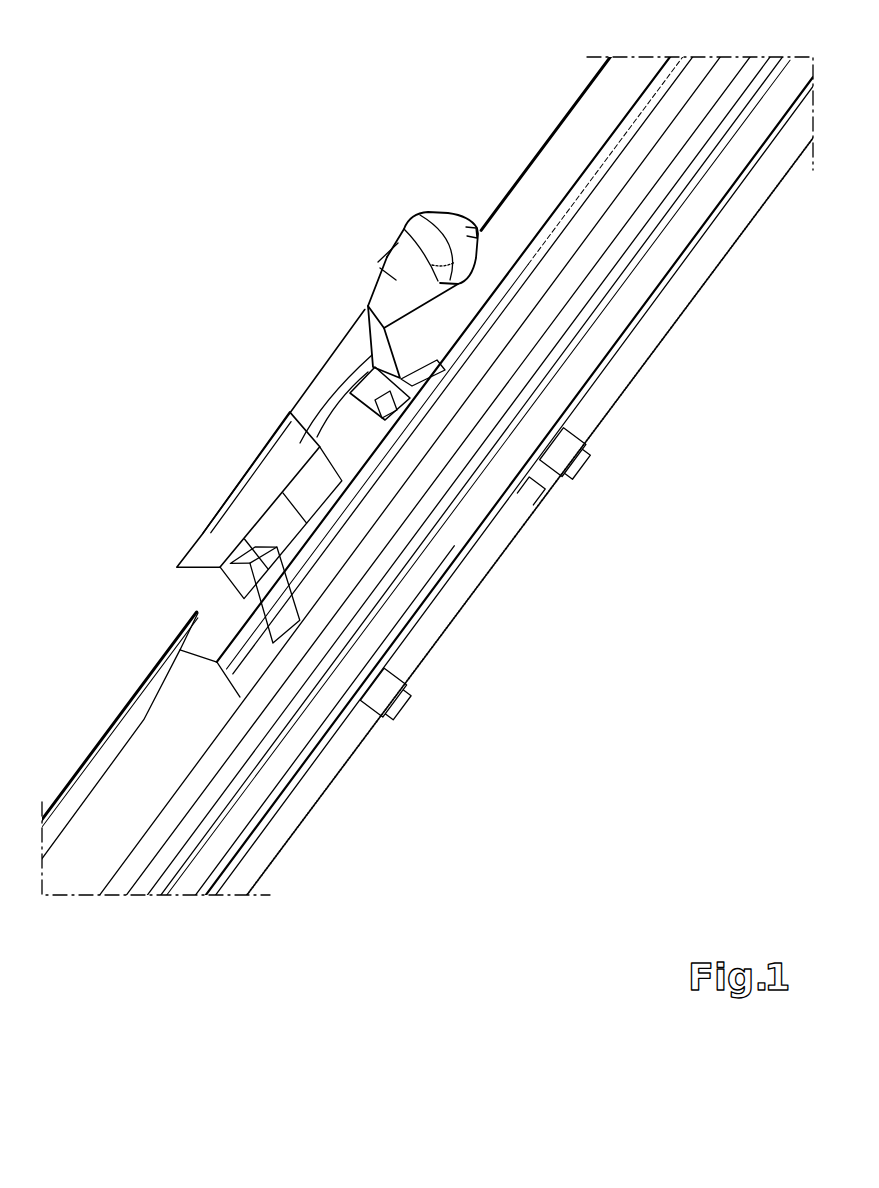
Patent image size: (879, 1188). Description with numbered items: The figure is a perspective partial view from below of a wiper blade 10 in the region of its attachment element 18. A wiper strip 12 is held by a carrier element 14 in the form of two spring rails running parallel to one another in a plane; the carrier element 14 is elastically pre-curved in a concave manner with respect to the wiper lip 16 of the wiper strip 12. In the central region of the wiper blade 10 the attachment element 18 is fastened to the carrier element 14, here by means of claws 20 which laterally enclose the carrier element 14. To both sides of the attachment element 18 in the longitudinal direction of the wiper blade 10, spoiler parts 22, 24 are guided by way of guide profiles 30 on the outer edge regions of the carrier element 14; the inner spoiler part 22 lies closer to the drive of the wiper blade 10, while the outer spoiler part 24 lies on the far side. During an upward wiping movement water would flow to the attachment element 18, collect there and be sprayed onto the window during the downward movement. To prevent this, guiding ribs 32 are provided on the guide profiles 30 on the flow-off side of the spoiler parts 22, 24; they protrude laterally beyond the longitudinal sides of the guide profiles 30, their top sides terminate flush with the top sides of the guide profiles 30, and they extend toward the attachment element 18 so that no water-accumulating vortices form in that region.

The wiper blade 10 is at (496, 104).
The wiper strip 12 is at (118, 956).
The carrier element 14 is at (367, 508).
The wiper lip 16 is at (467, 552).
The attachment element 18 is at (222, 432).
The claws 20 is at (440, 432).
The inner spoiler part 22 is at (162, 662).
The outer spoiler part 24 is at (512, 191).
The guide profiles 30 is at (577, 205).
The guiding ribs 32 is at (147, 712).